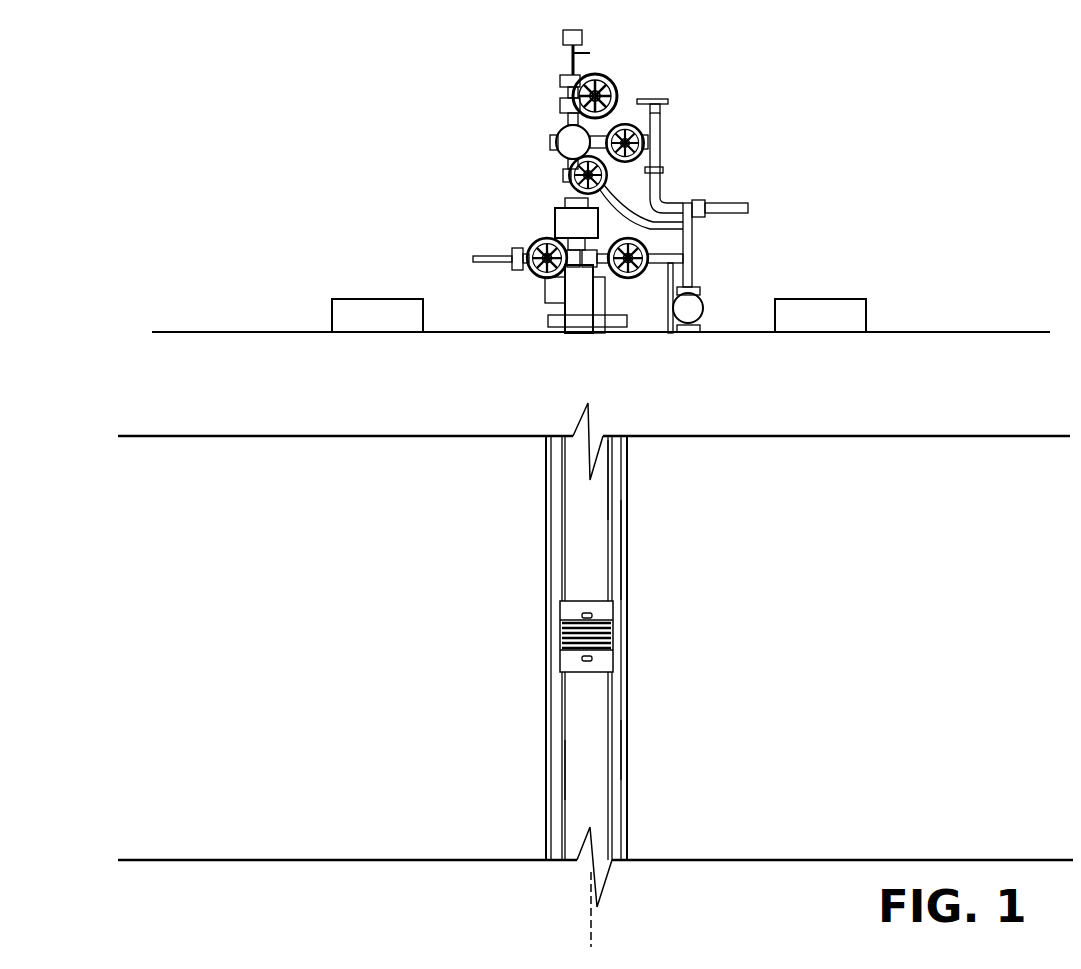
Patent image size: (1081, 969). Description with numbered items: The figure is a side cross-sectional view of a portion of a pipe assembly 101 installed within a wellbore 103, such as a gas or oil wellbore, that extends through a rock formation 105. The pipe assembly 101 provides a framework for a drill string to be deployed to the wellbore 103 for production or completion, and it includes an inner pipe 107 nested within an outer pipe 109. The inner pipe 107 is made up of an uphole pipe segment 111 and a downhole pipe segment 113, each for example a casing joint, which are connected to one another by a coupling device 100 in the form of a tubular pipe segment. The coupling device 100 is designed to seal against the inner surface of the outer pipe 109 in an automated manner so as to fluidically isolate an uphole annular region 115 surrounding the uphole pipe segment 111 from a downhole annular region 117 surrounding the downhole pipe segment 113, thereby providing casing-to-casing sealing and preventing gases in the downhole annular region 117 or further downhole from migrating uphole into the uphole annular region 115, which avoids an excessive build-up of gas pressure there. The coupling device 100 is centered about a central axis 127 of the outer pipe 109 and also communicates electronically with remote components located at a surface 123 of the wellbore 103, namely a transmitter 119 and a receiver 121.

The coupling device 100 is at (548, 611).
The pipe assembly 101 is at (532, 451).
The wellbore 103 is at (532, 476).
The rock formation 105 is at (334, 564).
The inner pipe 107 is at (622, 790).
The outer pipe 109 is at (545, 545).
The uphole pipe segment 111 is at (608, 478).
The downhole pipe segment 113 is at (565, 787).
The uphole annular region 115 is at (617, 547).
The downhole annular region 117 is at (617, 754).
The transmitter 119 is at (360, 312).
The receiver 121 is at (827, 313).
The surface 123 is at (955, 332).
The central axis 127 is at (591, 925).